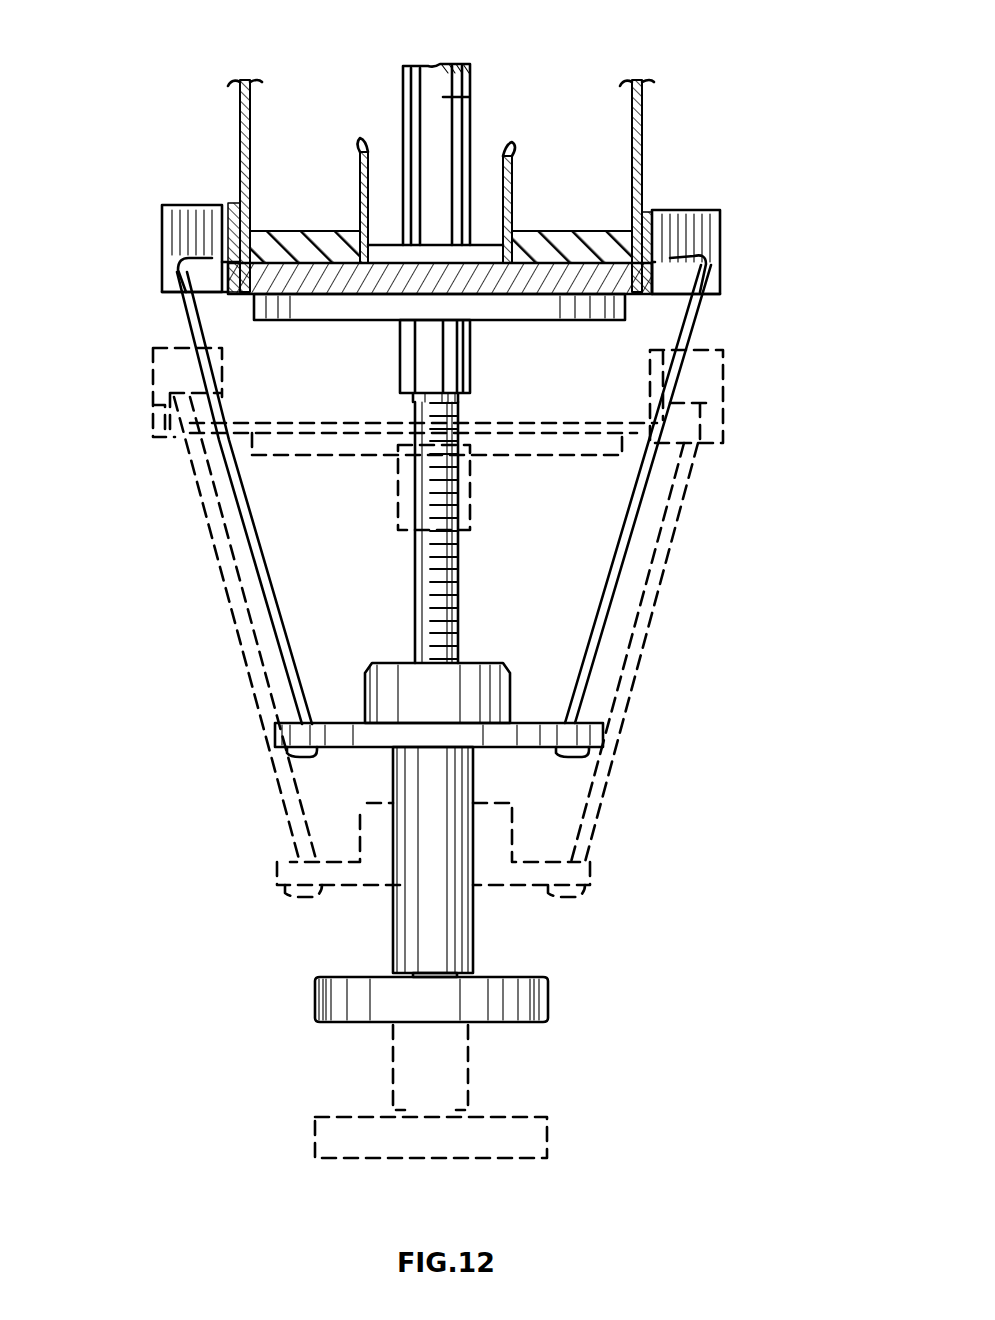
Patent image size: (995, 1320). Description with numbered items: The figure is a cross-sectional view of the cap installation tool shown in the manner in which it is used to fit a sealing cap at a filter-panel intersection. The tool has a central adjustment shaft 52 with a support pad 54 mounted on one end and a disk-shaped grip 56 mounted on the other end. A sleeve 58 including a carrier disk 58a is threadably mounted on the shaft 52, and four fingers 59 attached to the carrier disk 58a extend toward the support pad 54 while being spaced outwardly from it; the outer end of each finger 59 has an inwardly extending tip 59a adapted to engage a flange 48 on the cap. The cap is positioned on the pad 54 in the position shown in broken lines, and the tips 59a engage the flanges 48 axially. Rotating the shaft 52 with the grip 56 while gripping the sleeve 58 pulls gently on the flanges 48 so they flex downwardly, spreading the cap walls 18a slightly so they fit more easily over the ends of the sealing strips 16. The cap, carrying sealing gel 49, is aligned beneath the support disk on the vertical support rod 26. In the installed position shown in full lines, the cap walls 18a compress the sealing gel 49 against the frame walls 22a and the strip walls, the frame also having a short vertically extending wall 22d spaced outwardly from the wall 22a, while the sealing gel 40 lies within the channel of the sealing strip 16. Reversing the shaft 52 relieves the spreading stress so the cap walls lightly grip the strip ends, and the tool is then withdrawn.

The sealing strip 16 is at (337, 295).
The cap wall 18a is at (195, 205).
The interior vertical side wall 22a is at (642, 150).
The short vertically extending wall 22d is at (514, 185).
The vertical support rod 26 is at (452, 96).
The sealing gel 40 is at (570, 245).
The flange 48 is at (722, 288).
The sealing gel 49 is at (236, 212).
The central adjustment shaft 52 is at (460, 592).
The support pad 54 is at (570, 318).
The disk-shaped grip 56 is at (548, 1010).
The sleeve 58 is at (475, 798).
The carrier disk 58a is at (592, 738).
The finger 59 is at (265, 580).
The inwardly extending tip 59a is at (712, 262).